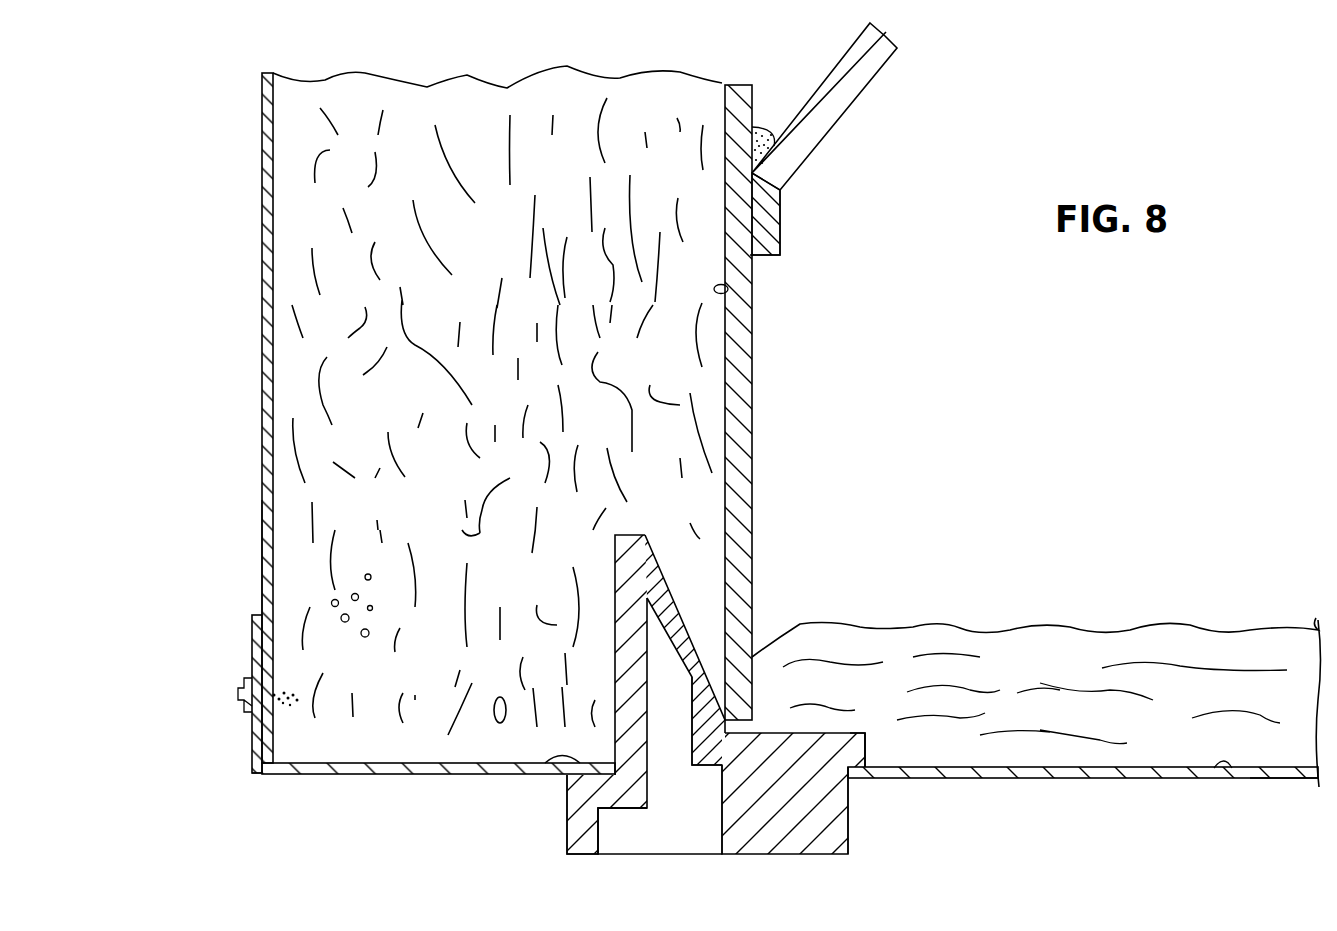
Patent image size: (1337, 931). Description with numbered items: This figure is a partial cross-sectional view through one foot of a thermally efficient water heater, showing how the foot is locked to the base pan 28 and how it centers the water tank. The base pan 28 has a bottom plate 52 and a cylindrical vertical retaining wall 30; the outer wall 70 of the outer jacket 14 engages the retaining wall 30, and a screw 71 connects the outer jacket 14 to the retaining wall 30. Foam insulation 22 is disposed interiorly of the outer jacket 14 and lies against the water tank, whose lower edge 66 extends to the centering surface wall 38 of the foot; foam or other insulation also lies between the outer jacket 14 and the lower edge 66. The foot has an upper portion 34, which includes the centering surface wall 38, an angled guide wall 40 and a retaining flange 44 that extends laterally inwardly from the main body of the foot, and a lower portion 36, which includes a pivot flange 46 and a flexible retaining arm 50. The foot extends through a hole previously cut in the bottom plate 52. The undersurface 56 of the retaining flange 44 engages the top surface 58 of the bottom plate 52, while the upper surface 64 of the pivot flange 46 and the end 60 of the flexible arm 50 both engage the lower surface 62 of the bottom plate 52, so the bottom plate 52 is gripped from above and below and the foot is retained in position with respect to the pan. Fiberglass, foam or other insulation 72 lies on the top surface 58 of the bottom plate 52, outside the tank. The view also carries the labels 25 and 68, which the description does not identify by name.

The outer jacket 14 is at (262, 292).
The foam insulation 22 is at (463, 125).
The inclined bar 25 is at (857, 100).
The base pan 28 is at (298, 786).
The vertical retaining wall 30 is at (252, 651).
The upper portion 34 is at (606, 645).
The lower portion 36 is at (814, 858).
The centering surface wall 38 is at (684, 752).
The angled guide wall 40 is at (675, 575).
The retaining flange 44 is at (867, 755).
The pivot flange 46 is at (567, 833).
The flexible retaining arm 50 is at (853, 781).
The bottom plate 52 is at (1126, 784).
The undersurface 56 is at (863, 756).
The top surface 58 is at (1217, 768).
The end 60 is at (850, 778).
The lower surface 62 is at (1277, 787).
The upper surface 64 is at (562, 760).
The lower edge 66 is at (753, 367).
The o-ring 68 is at (728, 291).
The outer wall 70 is at (262, 541).
The screw 71 is at (243, 712).
The insulation 72 is at (1044, 648).